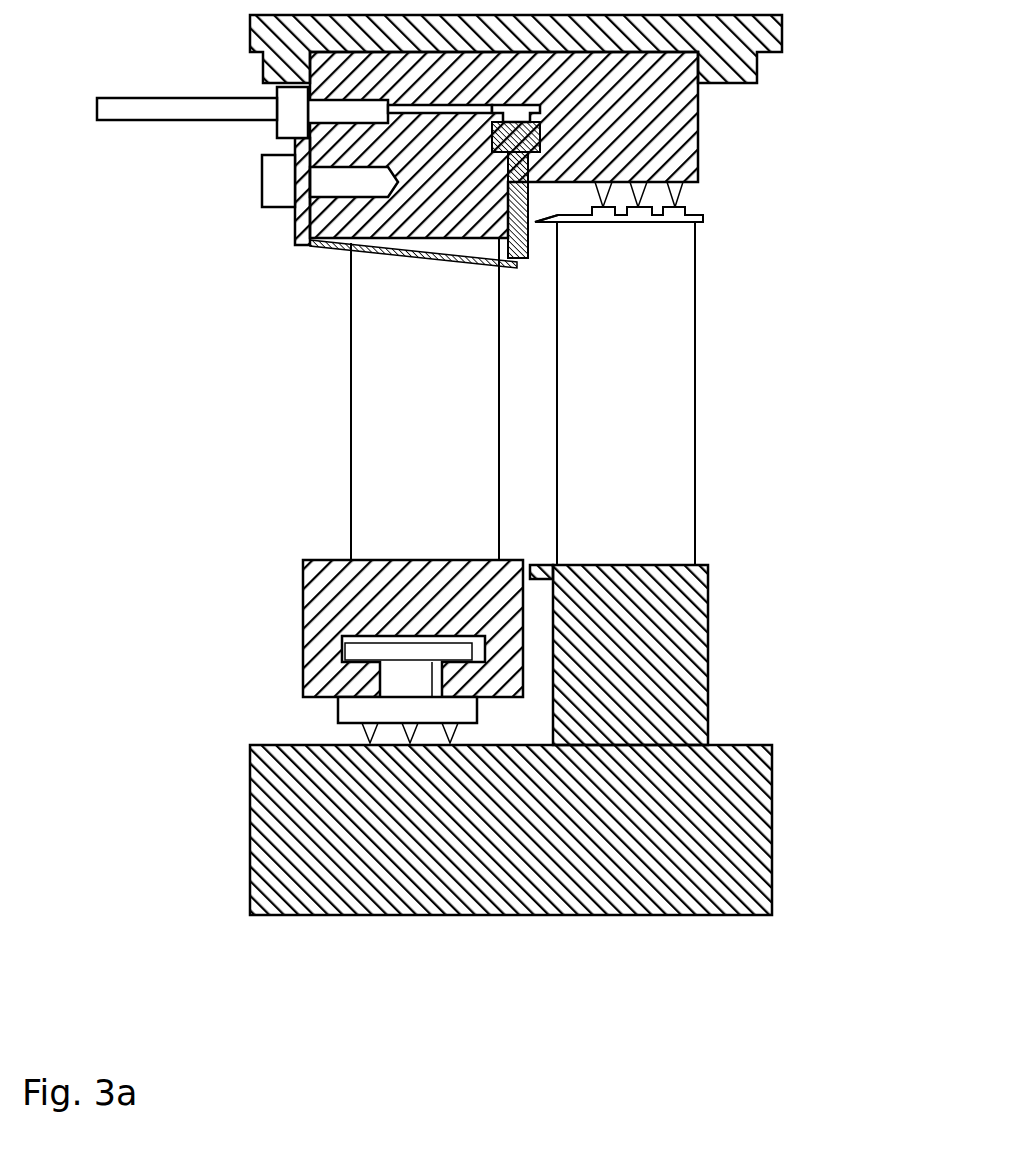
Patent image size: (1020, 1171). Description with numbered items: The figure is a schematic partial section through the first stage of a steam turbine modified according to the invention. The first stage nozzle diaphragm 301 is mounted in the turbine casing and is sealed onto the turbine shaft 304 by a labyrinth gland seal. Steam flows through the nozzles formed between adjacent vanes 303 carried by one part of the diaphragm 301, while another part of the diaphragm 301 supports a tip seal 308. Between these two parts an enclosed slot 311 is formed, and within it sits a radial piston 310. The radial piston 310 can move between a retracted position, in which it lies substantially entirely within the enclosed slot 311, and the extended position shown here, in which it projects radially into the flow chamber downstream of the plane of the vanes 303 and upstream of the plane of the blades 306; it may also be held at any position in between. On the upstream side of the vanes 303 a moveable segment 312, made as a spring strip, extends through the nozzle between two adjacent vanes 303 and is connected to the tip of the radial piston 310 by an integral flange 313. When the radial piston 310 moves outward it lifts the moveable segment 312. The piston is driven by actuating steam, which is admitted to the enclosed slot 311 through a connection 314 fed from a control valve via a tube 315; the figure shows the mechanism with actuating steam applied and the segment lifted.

The diaphragm 301 is at (667, 72).
The vanes 303 is at (420, 500).
The turbine shaft 304 is at (725, 785).
The blades 306 is at (625, 468).
The tip seal 308 is at (677, 197).
The radial piston 310 is at (537, 222).
The enclosed slot 311 is at (513, 112).
The moveable segment 312 is at (400, 262).
The integral flange 313 is at (518, 266).
The connection 314 is at (417, 100).
The tube 315 is at (188, 120).